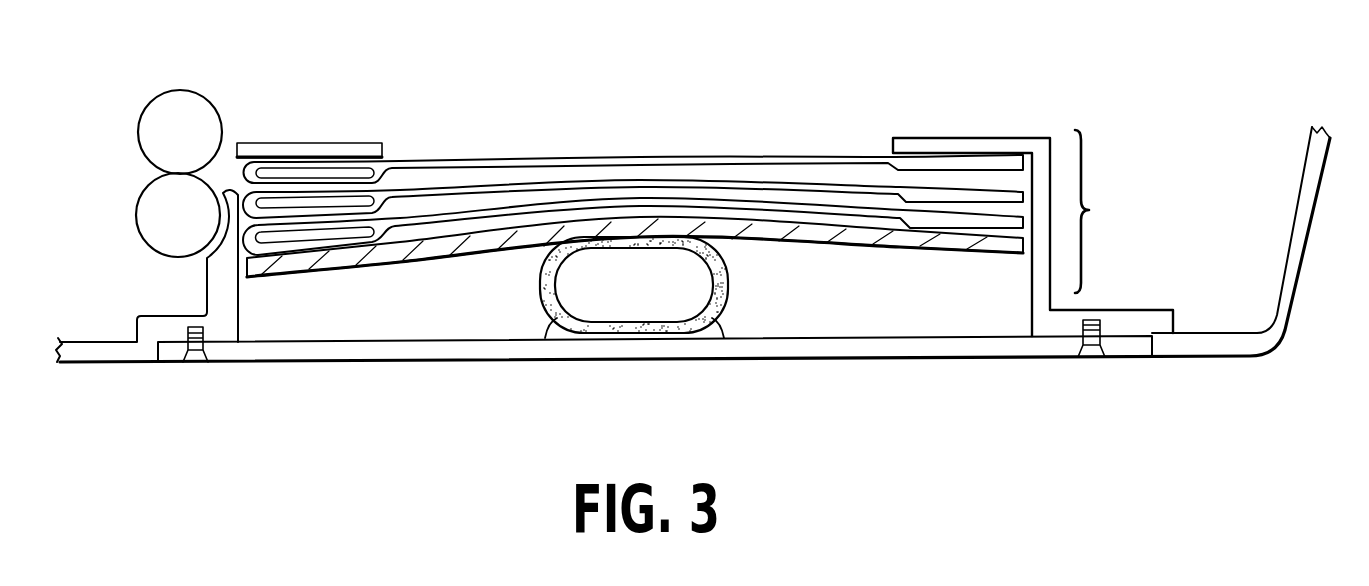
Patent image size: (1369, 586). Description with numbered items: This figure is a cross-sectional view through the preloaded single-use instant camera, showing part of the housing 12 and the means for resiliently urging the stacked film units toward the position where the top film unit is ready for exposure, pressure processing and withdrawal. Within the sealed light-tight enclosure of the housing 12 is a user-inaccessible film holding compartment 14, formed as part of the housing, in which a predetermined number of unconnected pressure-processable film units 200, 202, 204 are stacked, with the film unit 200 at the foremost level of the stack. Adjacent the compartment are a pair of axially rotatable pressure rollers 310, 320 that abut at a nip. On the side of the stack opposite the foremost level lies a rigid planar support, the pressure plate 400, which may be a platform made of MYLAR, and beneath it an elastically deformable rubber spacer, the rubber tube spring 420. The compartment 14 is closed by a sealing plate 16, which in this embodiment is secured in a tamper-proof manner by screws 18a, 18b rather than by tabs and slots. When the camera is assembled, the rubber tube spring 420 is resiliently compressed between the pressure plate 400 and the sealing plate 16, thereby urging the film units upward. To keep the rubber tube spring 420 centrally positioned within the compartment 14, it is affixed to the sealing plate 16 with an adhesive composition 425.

The housing 12 is at (110, 355).
The film holding compartment 14 is at (705, 233).
The sealing plate 16 is at (410, 352).
The screw 18a is at (194, 363).
The screw 18b is at (1091, 352).
The film unit 200 is at (438, 162).
The film unit 202 is at (517, 182).
The film unit 204 is at (605, 203).
The pressure roller 310 is at (180, 90).
The pressure roller 320 is at (140, 233).
The pressure plate 400 is at (878, 233).
The rubber tube spring 420 is at (545, 287).
The adhesive composition 425 is at (707, 330).